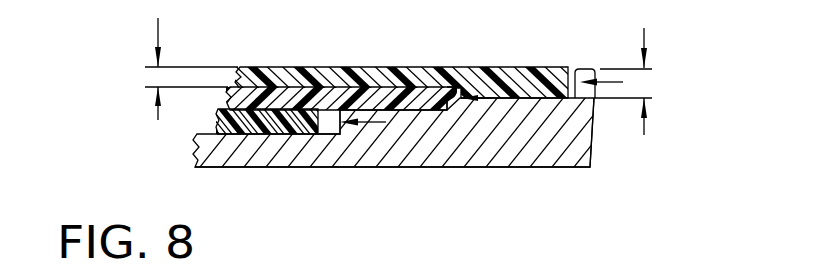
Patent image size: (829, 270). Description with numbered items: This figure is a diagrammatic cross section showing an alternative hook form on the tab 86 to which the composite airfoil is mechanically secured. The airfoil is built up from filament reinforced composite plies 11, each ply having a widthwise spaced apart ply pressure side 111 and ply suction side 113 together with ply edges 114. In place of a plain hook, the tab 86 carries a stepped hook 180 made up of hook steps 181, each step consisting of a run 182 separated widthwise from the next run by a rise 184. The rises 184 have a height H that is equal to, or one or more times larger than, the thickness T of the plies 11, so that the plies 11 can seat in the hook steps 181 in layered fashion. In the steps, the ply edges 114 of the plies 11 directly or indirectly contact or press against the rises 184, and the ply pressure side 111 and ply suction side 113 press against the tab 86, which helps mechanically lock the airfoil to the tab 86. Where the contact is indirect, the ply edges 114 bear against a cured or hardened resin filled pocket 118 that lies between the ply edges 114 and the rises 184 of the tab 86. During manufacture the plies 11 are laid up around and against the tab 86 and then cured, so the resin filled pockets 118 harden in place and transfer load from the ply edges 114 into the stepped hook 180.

The filament reinforced composite ply 11 is at (220, 110).
The tab 86 is at (513, 168).
The ply pressure side 111 is at (257, 68).
The ply suction side 113 is at (262, 136).
The ply edge 114 is at (333, 128).
The resin filled pocket 118 is at (320, 111).
The stepped hook 180 is at (576, 168).
The hook step 181 is at (448, 132).
The run 182 is at (440, 87).
The rise 184 is at (571, 88).
The thickness T is at (156, 34).
The height H is at (646, 33).